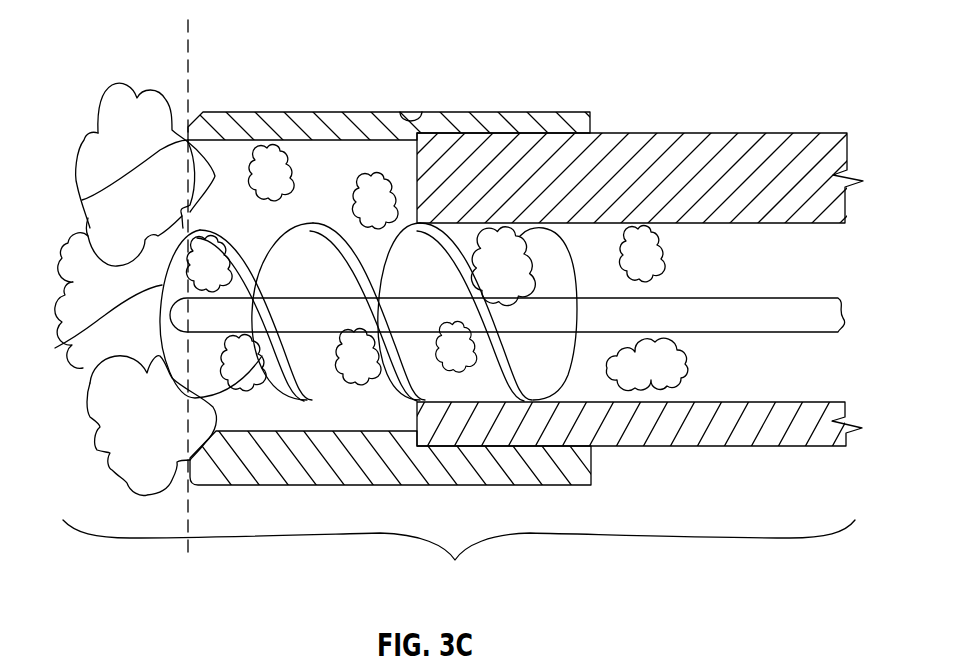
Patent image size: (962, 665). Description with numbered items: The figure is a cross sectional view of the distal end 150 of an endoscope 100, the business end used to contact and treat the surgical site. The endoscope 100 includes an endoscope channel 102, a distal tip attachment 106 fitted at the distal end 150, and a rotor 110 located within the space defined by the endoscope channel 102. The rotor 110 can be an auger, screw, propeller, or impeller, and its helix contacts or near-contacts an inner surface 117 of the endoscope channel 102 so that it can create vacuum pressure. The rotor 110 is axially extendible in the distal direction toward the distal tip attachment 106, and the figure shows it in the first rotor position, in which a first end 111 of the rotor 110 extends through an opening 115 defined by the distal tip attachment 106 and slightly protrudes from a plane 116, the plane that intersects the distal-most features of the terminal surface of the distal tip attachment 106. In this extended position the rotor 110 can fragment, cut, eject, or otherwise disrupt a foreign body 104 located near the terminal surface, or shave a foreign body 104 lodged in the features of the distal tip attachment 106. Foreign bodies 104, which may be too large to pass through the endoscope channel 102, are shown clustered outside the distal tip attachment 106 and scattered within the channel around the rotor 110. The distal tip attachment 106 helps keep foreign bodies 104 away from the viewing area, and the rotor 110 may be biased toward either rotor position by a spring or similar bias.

The endoscope 100 is at (502, 84).
The endoscope channel 102 is at (800, 223).
The foreign body 104 is at (378, 178).
The distal tip attachment 106 is at (240, 111).
The rotor 110 is at (582, 255).
The first end of the rotor 111 is at (77, 344).
The opening 115 is at (83, 202).
The plane 116 is at (186, 42).
The inner surface of the endoscope channel 117 is at (473, 223).
The distal end 150 is at (459, 560).